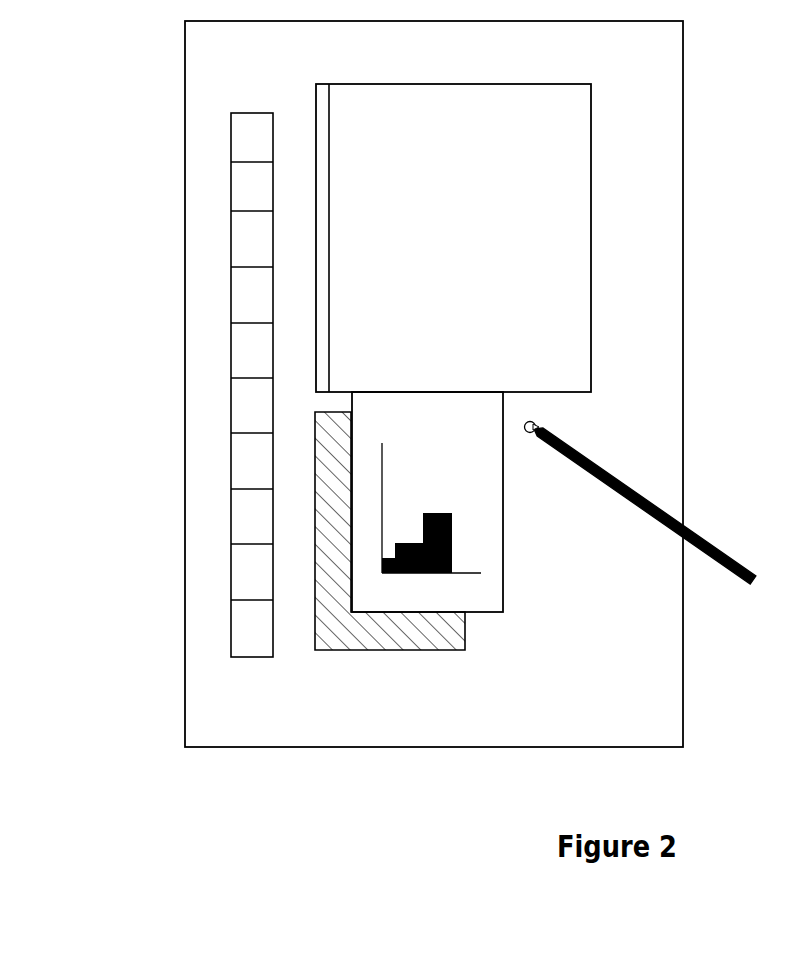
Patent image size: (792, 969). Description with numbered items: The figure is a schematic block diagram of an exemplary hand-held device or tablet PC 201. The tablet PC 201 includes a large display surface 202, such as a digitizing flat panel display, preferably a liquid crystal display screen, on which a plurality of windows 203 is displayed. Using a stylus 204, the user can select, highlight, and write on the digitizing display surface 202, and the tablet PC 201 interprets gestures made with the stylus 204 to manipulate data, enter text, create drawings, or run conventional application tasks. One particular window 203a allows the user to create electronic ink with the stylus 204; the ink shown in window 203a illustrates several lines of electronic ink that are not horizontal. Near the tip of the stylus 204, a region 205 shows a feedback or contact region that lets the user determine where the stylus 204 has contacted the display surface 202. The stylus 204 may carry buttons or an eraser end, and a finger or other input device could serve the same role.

The hand-held device or tablet PC 201 is at (138, 656).
The display surface 202 is at (204, 435).
The windows 203 is at (335, 656).
The window 203a is at (570, 220).
The stylus 204 is at (715, 567).
The region 205 is at (538, 425).